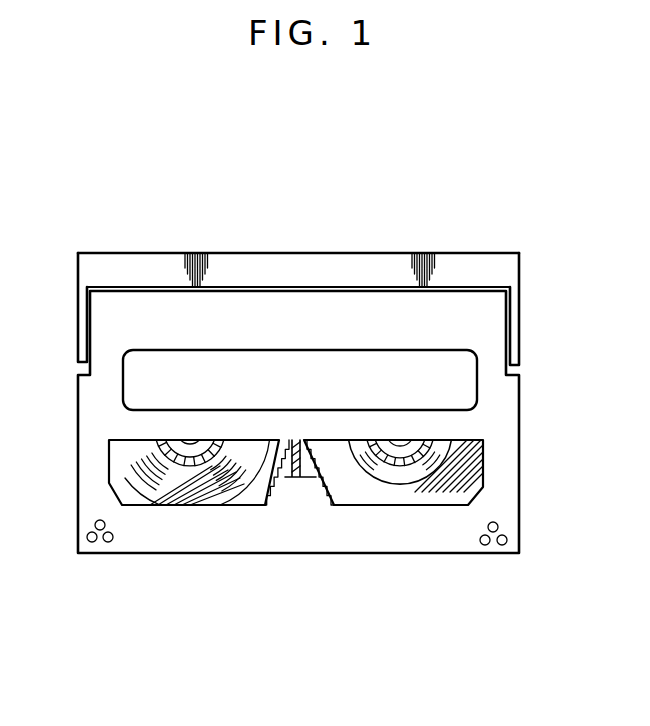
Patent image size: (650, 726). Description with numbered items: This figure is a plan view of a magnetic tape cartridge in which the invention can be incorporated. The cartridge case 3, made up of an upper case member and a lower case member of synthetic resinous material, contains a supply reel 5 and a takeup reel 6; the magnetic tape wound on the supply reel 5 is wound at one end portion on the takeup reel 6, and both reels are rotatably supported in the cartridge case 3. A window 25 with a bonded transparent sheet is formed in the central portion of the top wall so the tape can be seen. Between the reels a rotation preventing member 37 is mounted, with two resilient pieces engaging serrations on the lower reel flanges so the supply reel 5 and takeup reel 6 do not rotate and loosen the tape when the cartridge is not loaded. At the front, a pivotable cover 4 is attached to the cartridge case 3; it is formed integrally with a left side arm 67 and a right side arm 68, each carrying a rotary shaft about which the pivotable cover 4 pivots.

The cartridge case 3 is at (310, 532).
The pivotable cover 4 is at (450, 266).
The supply reel 5 is at (128, 472).
The takeup reel 6 is at (397, 477).
The window 25 is at (473, 473).
The rotation preventing member 37 is at (285, 478).
The left side arm 67 is at (77, 310).
The right side arm 68 is at (521, 325).